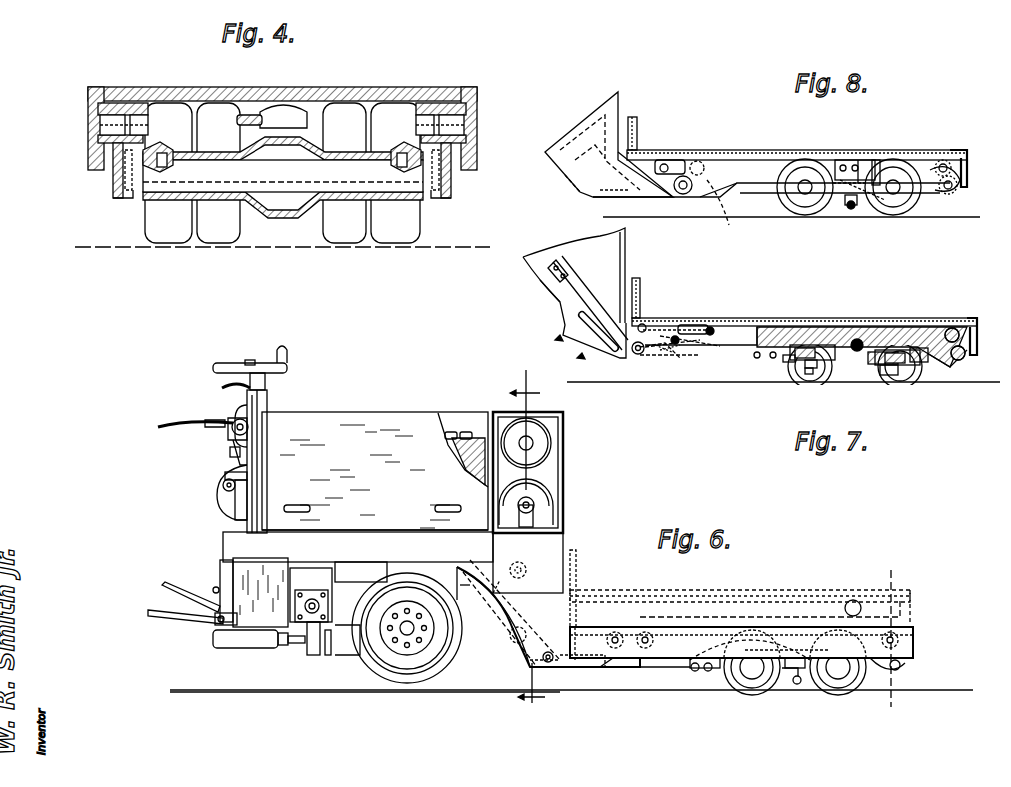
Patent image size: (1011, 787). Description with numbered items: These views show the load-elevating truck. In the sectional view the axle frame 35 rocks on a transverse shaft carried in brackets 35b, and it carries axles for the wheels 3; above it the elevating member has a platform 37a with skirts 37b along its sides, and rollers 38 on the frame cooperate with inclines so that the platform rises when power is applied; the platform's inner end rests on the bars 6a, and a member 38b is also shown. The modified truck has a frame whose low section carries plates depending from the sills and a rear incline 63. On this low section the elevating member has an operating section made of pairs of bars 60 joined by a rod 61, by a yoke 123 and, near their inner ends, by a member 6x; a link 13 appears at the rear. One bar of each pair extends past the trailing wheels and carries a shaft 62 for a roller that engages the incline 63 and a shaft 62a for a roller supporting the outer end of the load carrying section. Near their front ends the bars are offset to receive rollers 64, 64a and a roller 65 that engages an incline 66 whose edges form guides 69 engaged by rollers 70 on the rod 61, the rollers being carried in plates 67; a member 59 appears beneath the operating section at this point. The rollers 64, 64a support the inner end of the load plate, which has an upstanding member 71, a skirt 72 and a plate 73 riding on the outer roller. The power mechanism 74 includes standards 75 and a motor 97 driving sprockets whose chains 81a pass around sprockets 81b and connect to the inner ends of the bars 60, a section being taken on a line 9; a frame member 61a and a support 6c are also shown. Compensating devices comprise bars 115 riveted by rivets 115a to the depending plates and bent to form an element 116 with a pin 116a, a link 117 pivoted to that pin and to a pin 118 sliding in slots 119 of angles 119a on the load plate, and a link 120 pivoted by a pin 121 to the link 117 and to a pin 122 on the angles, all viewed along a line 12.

In FIG. 4, the wheels 3 is at (174, 101).
In FIG. 4, the axle frame 35 is at (268, 218).
In FIG. 4, the brackets 35b is at (155, 145).
In FIG. 4, the platform 37a is at (398, 87).
In FIG. 4, the skirts 37b is at (88, 123).
In FIG. 4, the rollers 38 is at (115, 92).
In FIG. 4, the side bracket 38b is at (477, 120).
In FIG. 4, the bars 6a is at (460, 204).
In FIG. 8, the bars 60 is at (768, 152).
In FIG. 7, the bars 60 is at (960, 320).
In FIG. 6, the bars 60 is at (740, 606).
In FIG. 8, the upstanding member 71 is at (640, 125).
In FIG. 7, the upstanding member 71 is at (640, 282).
In FIG. 6, the upstanding member 71 is at (578, 585).
In FIG. 8, the rear bracket 13 is at (930, 152).
In FIG. 8, the chains 81a is at (600, 105).
In FIG. 6, the chains 81a is at (505, 602).
In FIG. 8, the rod 61 is at (645, 174).
In FIG. 7, the rod 61 is at (630, 355).
In FIG. 8, the roller 64 is at (673, 151).
In FIG. 8, the roller 64a is at (705, 160).
In FIG. 8, the incline 66 is at (680, 195).
In FIG. 6, the incline 66 is at (582, 670).
In FIG. 8, the roller 65 is at (715, 197).
In FIG. 6, the roller 65 is at (620, 660).
In FIG. 8, the bar 59 is at (619, 201).
In FIG. 8, the rollers 70 is at (600, 195).
In FIG. 6, the rollers 70 is at (545, 673).
In FIG. 8, the plates 67 is at (724, 211).
In FIG. 8, the yoke 123 is at (860, 145).
In FIG. 7, the yoke 123 is at (852, 320).
In FIG. 8, the frame member 6x is at (838, 210).
In FIG. 6, the frame member 6x is at (760, 647).
In FIG. 8, the shaft 62a is at (954, 152).
In FIG. 7, the shaft 62a is at (975, 332).
In FIG. 8, the shaft 62 is at (948, 190).
In FIG. 7, the shaft 62 is at (970, 358).
In FIG. 7, the plate 73 is at (962, 318).
In FIG. 7, the rivets 115a is at (560, 272).
In FIG. 7, the bars 115 is at (607, 290).
In FIG. 7, the pin 122 is at (645, 323).
In FIG. 7, the shaft or pin 118 is at (700, 330).
In FIG. 7, the slots 119 is at (690, 330).
In FIG. 7, the angles 119a is at (715, 330).
In FIG. 7, the link 117 is at (692, 338).
In FIG. 7, the link 120 is at (680, 350).
In FIG. 7, the connecting element 116 is at (640, 355).
In FIG. 7, the pivot pin 116a is at (665, 356).
In FIG. 7, the pin 121 is at (675, 348).
In FIG. 7, the incline 63 is at (950, 368).
In FIG. 6, the power mechanism 74 is at (542, 472).
In FIG. 6, the motor 97 is at (560, 435).
In FIG. 6, the standards 75 is at (545, 510).
In FIG. 6, the section line 9 is at (527, 546).
In FIG. 6, the sprockets 81b is at (528, 597).
In FIG. 6, the ramp member 6c is at (548, 617).
In FIG. 6, the frame 61a is at (700, 630).
In FIG. 6, the skirt 72 is at (690, 665).
In FIG. 6, the guides 69 is at (580, 665).
In FIG. 6, the section line 12 is at (889, 636).